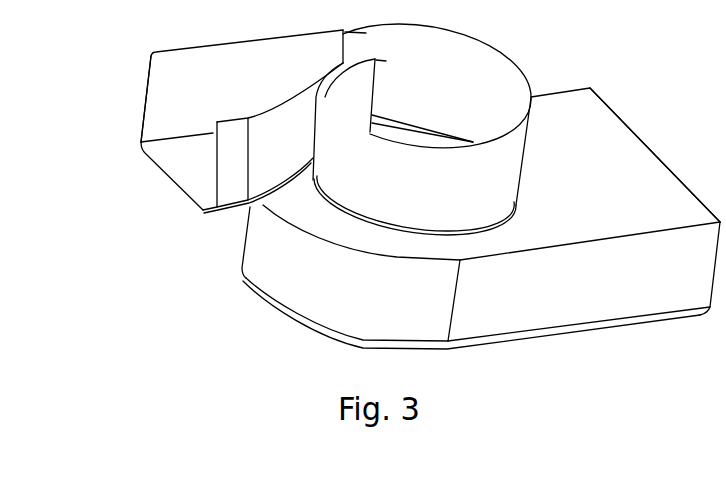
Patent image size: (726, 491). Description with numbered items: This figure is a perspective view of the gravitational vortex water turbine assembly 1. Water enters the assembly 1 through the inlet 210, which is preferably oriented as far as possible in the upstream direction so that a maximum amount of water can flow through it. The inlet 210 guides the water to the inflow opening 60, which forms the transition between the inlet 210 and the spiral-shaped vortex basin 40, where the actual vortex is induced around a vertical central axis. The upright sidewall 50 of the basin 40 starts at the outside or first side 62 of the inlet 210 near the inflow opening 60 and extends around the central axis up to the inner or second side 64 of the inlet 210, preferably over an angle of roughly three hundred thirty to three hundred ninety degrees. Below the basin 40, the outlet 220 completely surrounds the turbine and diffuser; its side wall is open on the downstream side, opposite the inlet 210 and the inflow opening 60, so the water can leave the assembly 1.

The gravitational vortex water turbine assembly 1 is at (177, 305).
The spiral-shaped vortex basin 40 is at (541, 157).
The upright sidewall 50 is at (502, 70).
The inflow opening 60 is at (352, 52).
The first side 62 is at (366, 33).
The second side 64 is at (386, 61).
The inlet 210 is at (231, 62).
The outlet 220 is at (661, 168).